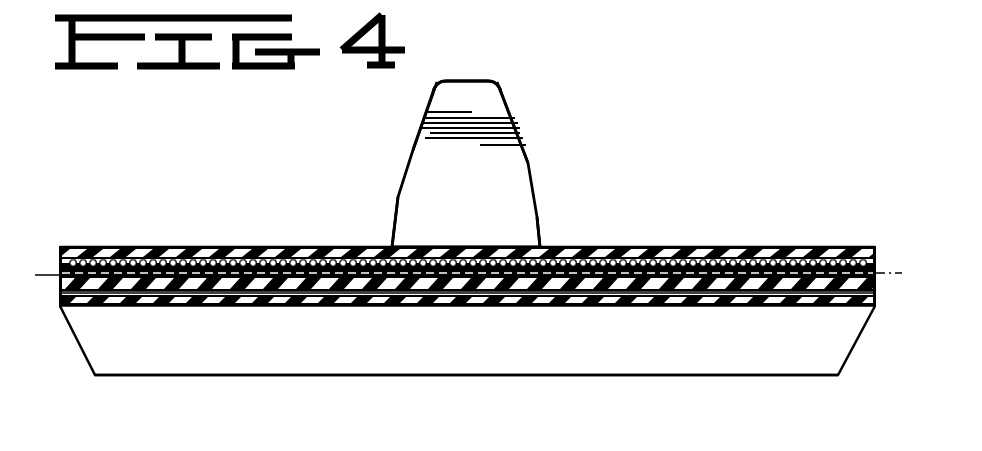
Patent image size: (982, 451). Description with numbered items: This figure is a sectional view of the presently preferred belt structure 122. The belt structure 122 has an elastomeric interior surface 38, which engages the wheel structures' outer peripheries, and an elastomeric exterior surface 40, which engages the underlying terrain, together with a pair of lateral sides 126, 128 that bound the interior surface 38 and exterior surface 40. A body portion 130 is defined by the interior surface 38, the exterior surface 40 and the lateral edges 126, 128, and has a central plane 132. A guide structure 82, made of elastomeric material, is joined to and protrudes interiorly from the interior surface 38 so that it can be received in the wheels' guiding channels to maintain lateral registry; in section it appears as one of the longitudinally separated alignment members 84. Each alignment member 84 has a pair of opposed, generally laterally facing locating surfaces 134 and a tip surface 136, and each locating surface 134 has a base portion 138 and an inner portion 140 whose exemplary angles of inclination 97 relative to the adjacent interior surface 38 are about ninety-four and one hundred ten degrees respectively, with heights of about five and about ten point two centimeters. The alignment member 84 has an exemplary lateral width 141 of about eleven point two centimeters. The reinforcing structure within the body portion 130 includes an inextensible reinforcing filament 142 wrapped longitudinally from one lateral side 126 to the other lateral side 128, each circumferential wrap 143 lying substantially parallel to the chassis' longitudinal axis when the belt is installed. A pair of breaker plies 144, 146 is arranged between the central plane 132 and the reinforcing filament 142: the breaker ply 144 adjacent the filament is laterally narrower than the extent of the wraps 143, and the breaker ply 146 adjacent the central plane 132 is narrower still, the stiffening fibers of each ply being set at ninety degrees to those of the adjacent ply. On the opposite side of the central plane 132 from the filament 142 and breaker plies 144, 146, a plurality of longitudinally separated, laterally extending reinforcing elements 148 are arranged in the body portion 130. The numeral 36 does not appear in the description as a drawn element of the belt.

The substrate 36 is at (350, 379).
The elastomeric interior surface 38 is at (247, 247).
The elastomeric exterior surface 40 is at (167, 298).
The guide structure 82 is at (538, 138).
The alignment member 84 is at (528, 168).
The angle of inclination 97 is at (401, 164).
The belt structure 122 is at (515, 379).
The lateral side 126 is at (60, 262).
The lateral side 128 is at (878, 248).
The body portion 130 is at (778, 252).
The central plane 132 is at (46, 280).
The locating surface 134 is at (408, 133).
The tip surface 136 is at (462, 80).
The base portion 138 is at (392, 212).
The inner portion 140 is at (432, 106).
The lateral width 141 is at (538, 238).
The reinforcing filament 142 is at (82, 262).
The circumferential wrap 143 is at (192, 262).
The breaker ply 144 is at (847, 291).
The breaker ply 146 is at (804, 290).
The reinforcing element 148 is at (100, 300).